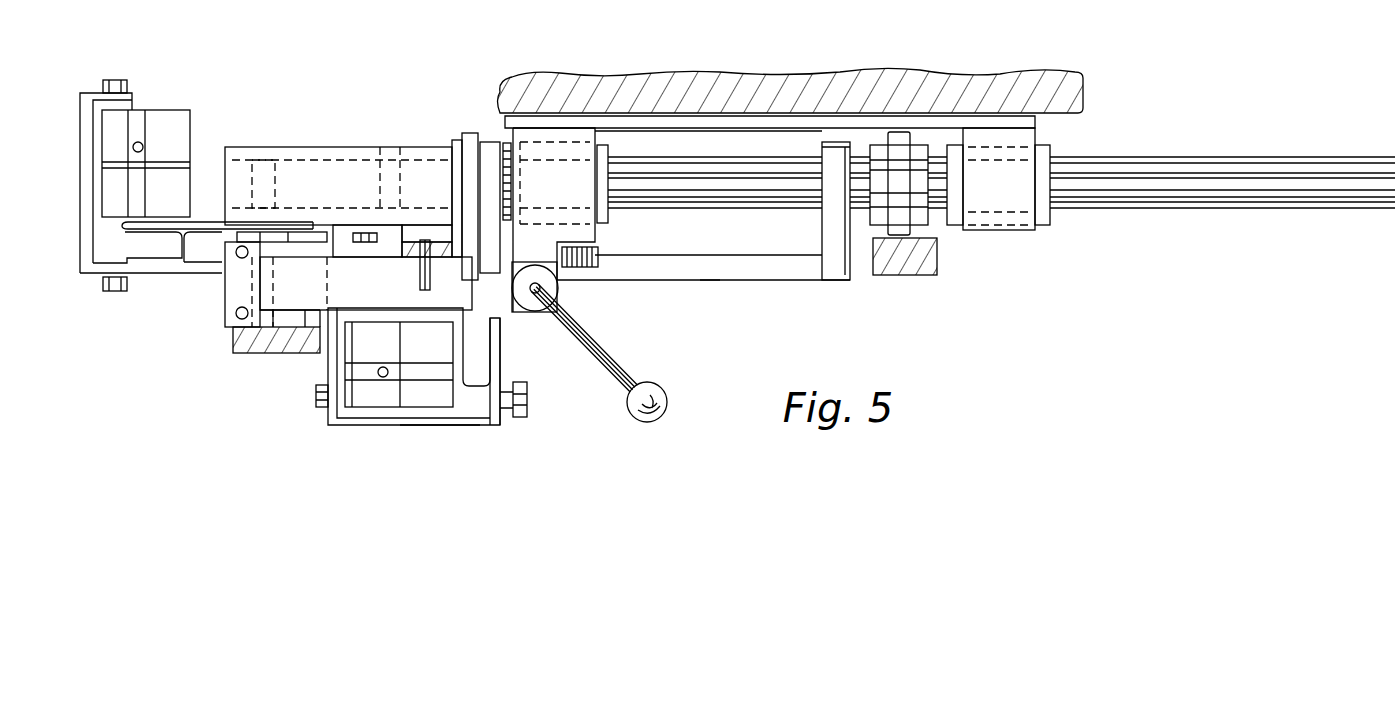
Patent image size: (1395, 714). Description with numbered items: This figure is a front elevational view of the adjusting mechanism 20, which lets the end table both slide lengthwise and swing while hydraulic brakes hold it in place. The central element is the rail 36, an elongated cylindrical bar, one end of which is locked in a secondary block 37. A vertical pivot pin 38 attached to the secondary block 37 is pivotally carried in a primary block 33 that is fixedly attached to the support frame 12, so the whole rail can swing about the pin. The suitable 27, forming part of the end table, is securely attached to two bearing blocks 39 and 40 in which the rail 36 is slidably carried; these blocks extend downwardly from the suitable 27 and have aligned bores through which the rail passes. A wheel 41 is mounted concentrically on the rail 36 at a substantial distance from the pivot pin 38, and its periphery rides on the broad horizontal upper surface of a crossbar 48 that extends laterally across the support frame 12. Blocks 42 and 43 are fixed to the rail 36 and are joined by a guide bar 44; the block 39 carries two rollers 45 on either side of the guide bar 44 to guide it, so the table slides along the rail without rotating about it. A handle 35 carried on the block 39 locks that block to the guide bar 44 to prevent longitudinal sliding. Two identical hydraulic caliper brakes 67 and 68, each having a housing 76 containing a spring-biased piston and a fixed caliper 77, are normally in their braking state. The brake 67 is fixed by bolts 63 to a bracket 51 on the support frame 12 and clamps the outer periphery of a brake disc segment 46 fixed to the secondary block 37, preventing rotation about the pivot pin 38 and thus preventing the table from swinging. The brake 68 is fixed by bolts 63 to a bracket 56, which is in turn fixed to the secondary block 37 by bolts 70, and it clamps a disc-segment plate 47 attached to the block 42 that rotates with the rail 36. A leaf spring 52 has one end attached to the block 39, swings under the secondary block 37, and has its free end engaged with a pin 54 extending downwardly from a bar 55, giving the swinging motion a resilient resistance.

The support frame 12 is at (280, 353).
The adjusting mechanism 20 is at (709, 290).
The suitable 27 is at (1012, 88).
The primary block 33 is at (305, 353).
The handle 35 is at (590, 347).
The rail 36 is at (1208, 198).
The secondary block 37 is at (334, 150).
The pivot pin 38 is at (249, 145).
The bearing block 39 is at (558, 132).
The bearing block 40 is at (1013, 213).
The wheel 41 is at (903, 132).
The block 42 is at (488, 150).
The block 43 is at (836, 258).
The guide bar 44 is at (773, 265).
The rollers 45 is at (598, 262).
The brake disc segment 46 is at (203, 223).
The disc-segment plate 47 is at (492, 317).
The crossbar 48 is at (908, 277).
The bracket 51 is at (177, 277).
The leaf spring 52 is at (345, 267).
The pins 54 is at (425, 243).
The bar 55 is at (413, 258).
The bracket 56 is at (495, 428).
The bolts 63 is at (123, 83).
The hydraulic caliper brake 67 is at (182, 98).
The hydraulic caliper brake 68 is at (440, 413).
The bolts 70 is at (363, 240).
The housing 76 is at (158, 127).
The fixed caliper 77 is at (182, 250).